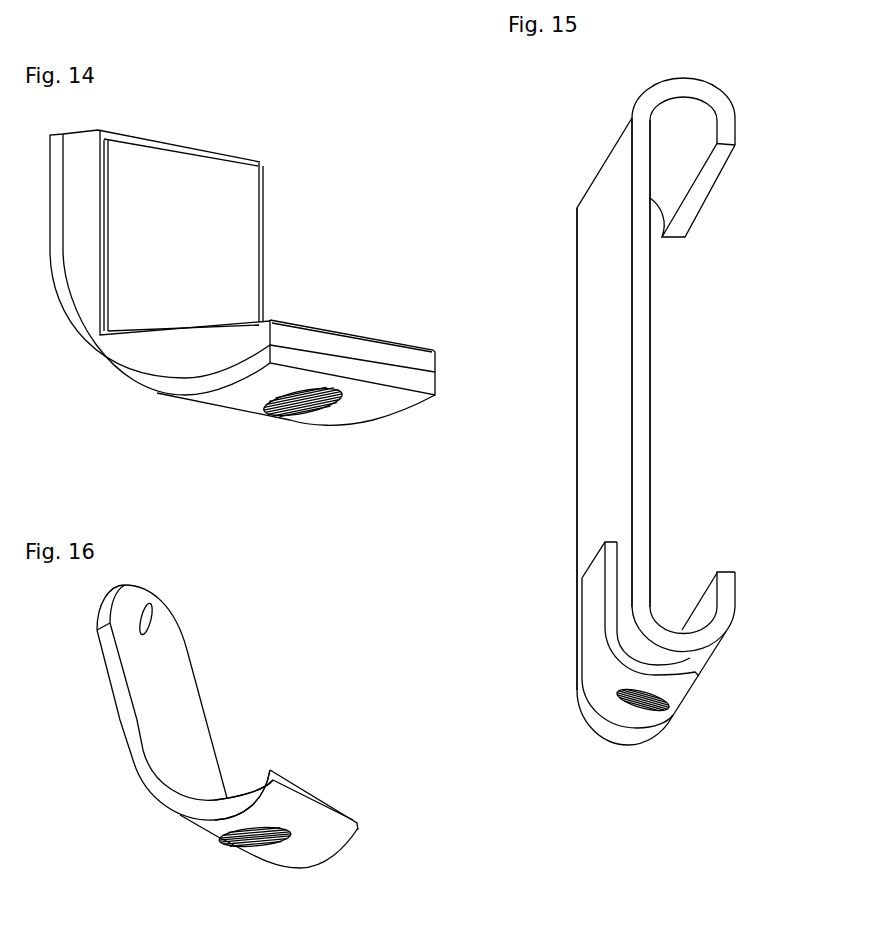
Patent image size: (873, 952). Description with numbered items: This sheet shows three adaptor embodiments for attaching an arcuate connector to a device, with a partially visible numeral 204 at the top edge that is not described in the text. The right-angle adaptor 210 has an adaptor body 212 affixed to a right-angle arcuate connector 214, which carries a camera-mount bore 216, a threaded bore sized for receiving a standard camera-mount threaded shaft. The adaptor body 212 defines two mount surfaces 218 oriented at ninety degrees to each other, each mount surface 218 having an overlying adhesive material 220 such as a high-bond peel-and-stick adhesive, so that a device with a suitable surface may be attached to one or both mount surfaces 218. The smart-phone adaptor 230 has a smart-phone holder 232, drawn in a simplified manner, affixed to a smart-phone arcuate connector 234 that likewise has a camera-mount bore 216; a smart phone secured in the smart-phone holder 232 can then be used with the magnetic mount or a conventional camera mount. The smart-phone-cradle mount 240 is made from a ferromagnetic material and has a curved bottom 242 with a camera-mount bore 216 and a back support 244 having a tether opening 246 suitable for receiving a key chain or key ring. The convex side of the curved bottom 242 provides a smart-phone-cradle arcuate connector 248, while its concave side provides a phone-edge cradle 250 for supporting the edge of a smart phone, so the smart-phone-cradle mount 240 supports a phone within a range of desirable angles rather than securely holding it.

In FIG. 14, the clip assembly 204 is at (386, 6).
In FIG. 14, the right-angle adaptor 210 is at (204, 109).
In FIG. 14, the adaptor body 212 is at (167, 358).
In FIG. 14, the right-angle arcuate connector 214 is at (102, 360).
In FIG. 14, the camera-mount bore 216 is at (296, 405).
In FIG. 15, the camera-mount bore 216 is at (633, 705).
In FIG. 16, the camera-mount bore 216 is at (253, 843).
In FIG. 14, the mount surface 218 is at (257, 162).
In FIG. 14, the adhesive material 220 is at (345, 333).
In FIG. 15, the smart-phone adaptor 230 is at (686, 391).
In FIG. 15, the smart-phone holder 232 is at (592, 460).
In FIG. 15, the smart-phone arcuate connector 234 is at (598, 676).
In FIG. 16, the smart-phone-cradle mount 240 is at (228, 656).
In FIG. 16, the curved bottom 242 is at (167, 826).
In FIG. 16, the back support 244 is at (97, 690).
In FIG. 16, the tether opening 246 is at (147, 618).
In FIG. 16, the smart-phone-cradle arcuate connector 248 is at (327, 837).
In FIG. 16, the phone-edge cradle 250 is at (240, 792).